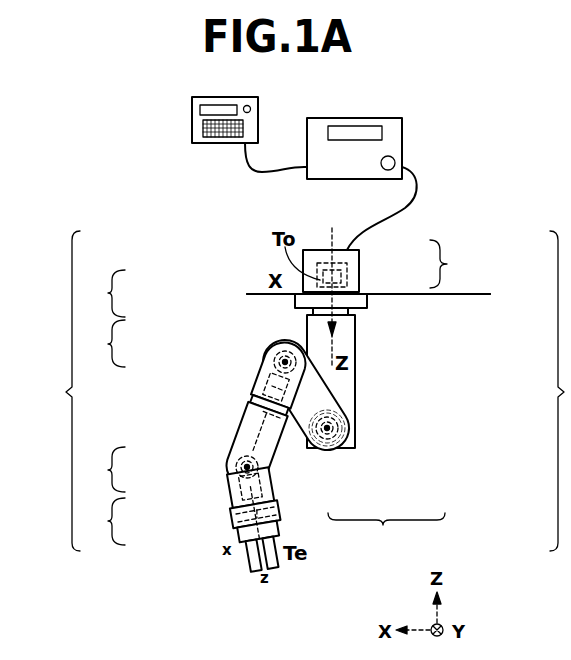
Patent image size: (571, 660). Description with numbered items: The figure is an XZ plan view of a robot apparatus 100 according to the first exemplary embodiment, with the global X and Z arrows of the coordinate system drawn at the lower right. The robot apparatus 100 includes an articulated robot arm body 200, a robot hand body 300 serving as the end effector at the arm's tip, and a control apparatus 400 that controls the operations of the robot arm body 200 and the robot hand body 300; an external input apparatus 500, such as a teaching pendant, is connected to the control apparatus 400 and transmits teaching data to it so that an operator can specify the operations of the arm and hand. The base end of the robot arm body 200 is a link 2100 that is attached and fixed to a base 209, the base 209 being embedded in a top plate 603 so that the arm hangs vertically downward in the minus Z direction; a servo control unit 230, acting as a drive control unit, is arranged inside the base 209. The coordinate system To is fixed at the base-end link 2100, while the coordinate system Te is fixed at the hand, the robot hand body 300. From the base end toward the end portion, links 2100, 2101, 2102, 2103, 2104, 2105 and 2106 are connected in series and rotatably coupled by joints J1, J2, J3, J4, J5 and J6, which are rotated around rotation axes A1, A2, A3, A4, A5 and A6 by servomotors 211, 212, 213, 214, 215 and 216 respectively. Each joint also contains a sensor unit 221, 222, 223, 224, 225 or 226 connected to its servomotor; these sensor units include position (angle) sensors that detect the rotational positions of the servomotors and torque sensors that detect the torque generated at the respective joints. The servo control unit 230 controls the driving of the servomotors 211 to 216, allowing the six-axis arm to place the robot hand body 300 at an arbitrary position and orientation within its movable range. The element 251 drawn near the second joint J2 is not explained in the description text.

The robot apparatus 100 is at (467, 98).
The articulated robot arm body 200 is at (292, 391).
The base 209 is at (312, 249).
The servomotor 211 is at (360, 263).
The sensor unit 221 is at (360, 280).
The servomotor 212 is at (332, 455).
The sensor unit 222 is at (343, 453).
The servomotor 213 is at (276, 352).
The sensor unit 223 is at (270, 372).
The servomotor 214 is at (262, 400).
The sensor unit 224 is at (265, 412).
The servomotor 215 is at (238, 458).
The sensor unit 225 is at (240, 480).
The servomotor 216 is at (240, 492).
The sensor unit 226 is at (240, 505).
The servo control unit 230 is at (360, 251).
The inertial sensor 251 is at (342, 406).
The robot hand body 300 is at (293, 572).
The control apparatus 400 is at (354, 118).
The external input apparatus 500 is at (192, 114).
The top plate 603 is at (476, 280).
The link 2100 is at (366, 298).
The link 2101 is at (345, 333).
The link 2102 is at (317, 388).
The link 2103 is at (282, 342).
The link 2104 is at (242, 423).
The link 2105 is at (236, 440).
The link 2106 is at (278, 517).
The rotation axis A1 is at (331, 285).
The rotation axis A2 is at (340, 430).
The rotation axis A3 is at (270, 345).
The rotation axis A4 is at (248, 395).
The rotation axis A5 is at (266, 472).
The rotation axis A6 is at (238, 528).
The joint J1 is at (450, 264).
The joint J2 is at (386, 531).
The joint J3 is at (100, 293).
The joint J4 is at (100, 343).
The joint J5 is at (100, 469).
The joint J6 is at (100, 521).